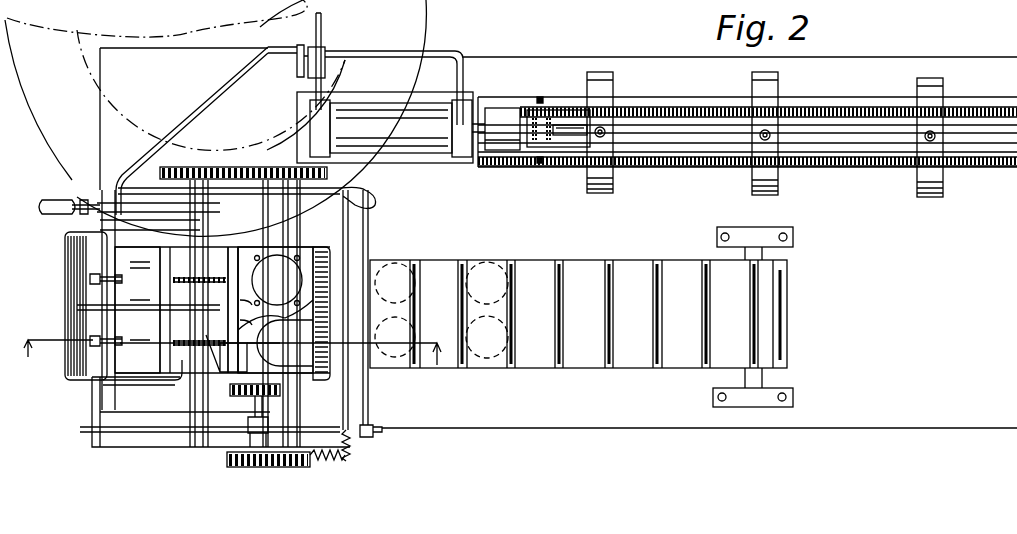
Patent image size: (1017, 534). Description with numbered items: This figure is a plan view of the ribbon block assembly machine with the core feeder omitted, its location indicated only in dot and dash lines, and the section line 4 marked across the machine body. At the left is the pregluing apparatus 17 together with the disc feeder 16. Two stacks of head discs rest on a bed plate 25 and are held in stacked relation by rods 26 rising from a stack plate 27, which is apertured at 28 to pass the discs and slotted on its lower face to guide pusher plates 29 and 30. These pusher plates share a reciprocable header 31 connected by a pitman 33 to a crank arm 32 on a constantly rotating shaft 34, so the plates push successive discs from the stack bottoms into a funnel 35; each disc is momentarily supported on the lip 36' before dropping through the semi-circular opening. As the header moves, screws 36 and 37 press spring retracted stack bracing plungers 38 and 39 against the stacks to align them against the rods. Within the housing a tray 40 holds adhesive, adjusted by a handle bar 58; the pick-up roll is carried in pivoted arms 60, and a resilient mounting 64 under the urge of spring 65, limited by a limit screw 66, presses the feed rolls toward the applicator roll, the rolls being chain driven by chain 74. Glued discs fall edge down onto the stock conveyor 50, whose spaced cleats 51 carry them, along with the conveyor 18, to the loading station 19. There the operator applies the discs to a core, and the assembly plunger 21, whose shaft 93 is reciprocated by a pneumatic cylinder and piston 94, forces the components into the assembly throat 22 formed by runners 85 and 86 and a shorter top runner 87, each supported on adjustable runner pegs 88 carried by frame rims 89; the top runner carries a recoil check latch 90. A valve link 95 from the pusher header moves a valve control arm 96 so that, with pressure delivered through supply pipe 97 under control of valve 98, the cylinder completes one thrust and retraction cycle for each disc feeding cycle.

The section line 4- 4 is at (228, 364).
The disc feeder 16 is at (138, 362).
The pregluing apparatus 17 is at (110, 252).
The conveyor 18 is at (540, 265).
The loading station 19 is at (553, 117).
The assembly plunger 21 is at (497, 110).
The assembly throat 22 is at (677, 113).
The bed plate 25 is at (290, 267).
The rods 26 is at (263, 258).
The stack plate 27 is at (222, 248).
The aperture 28 is at (258, 372).
The pusher plate 29 is at (125, 267).
The pusher plate 30 is at (115, 325).
The header 31 is at (100, 397).
The crank arm 32 is at (232, 452).
The pitman 33 is at (165, 413).
The shaft 34 is at (258, 409).
The funnel 35 is at (333, 375).
The screw 36 is at (80, 358).
The lip 36' is at (353, 305).
The screw 37 is at (90, 279).
The stack bracing plunger 38 is at (212, 333).
The stack bracing plunger 39 is at (187, 277).
The tray 40 is at (65, 265).
The stock conveyor 50 is at (433, 263).
The cleats 51 is at (465, 263).
The handle bar 58 is at (82, 198).
The arms 60 is at (186, 447).
The resilient mounting 64 is at (312, 456).
The spring 65 is at (346, 447).
The limit screw 66 is at (258, 447).
The chain 74 is at (233, 167).
The runner 85 is at (797, 157).
The runner 86 is at (807, 110).
The top runner 87 is at (845, 133).
The runner pegs 88 is at (770, 135).
The frame rims 89 is at (753, 183).
The recoil check latch 90 is at (563, 138).
The shaft 93 is at (480, 118).
The cylinder and piston 94 is at (374, 118).
The valve link 95 is at (167, 140).
The valve control arm 96 is at (298, 52).
The supply pipe 97 is at (322, 26).
The valve 98 is at (325, 56).